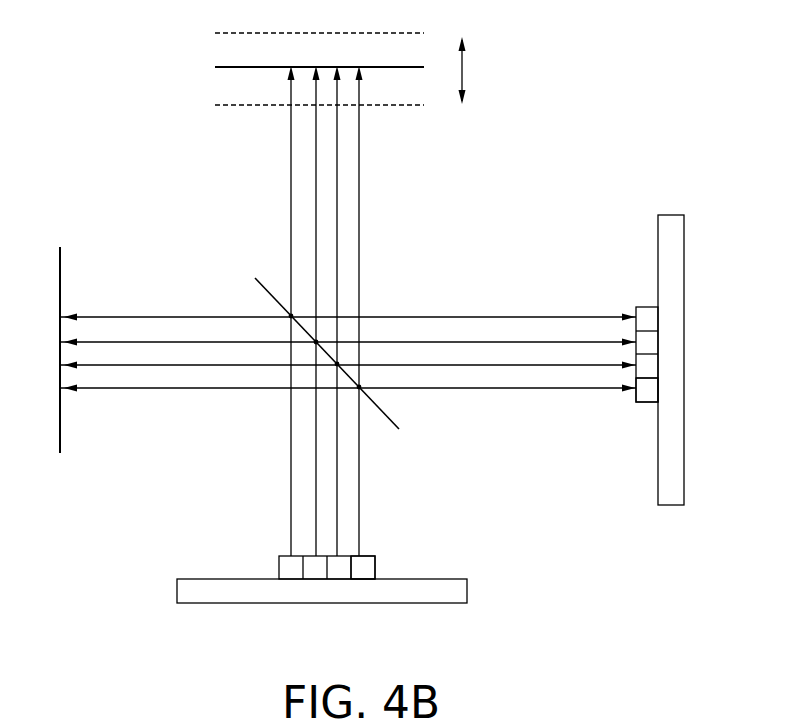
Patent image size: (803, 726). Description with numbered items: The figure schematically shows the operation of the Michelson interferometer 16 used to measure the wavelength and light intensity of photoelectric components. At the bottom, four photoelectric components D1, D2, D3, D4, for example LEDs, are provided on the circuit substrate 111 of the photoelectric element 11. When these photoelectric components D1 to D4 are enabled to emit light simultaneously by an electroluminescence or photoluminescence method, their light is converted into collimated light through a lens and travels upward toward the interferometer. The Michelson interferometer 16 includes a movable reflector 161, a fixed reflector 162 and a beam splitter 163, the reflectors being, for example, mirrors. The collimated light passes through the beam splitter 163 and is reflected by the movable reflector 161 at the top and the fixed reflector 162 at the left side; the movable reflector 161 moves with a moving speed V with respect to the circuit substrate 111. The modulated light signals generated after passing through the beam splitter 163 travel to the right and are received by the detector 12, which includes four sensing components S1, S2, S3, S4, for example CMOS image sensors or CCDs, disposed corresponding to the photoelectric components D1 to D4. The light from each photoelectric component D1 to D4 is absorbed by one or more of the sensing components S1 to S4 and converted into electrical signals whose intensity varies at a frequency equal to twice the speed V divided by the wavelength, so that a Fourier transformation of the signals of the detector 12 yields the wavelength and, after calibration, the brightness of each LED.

The photoelectric element 11 is at (384, 359).
The circuit substrate 111 is at (455, 590).
The detector 12 is at (640, 360).
The Michelson interferometer 16 is at (231, 243).
The movable reflector 161 is at (214, 68).
The fixed reflector 162 is at (62, 268).
The beam splitter 163 is at (262, 288).
The photoelectric component D1 is at (290, 565).
The photoelectric component D2 is at (316, 572).
The photoelectric component D3 is at (339, 568).
The photoelectric component D4 is at (366, 566).
The sensing component S1 is at (647, 318).
The sensing component S2 is at (647, 343).
The sensing component S3 is at (648, 363).
The sensing component S4 is at (648, 392).
The moving speed V is at (475, 70).